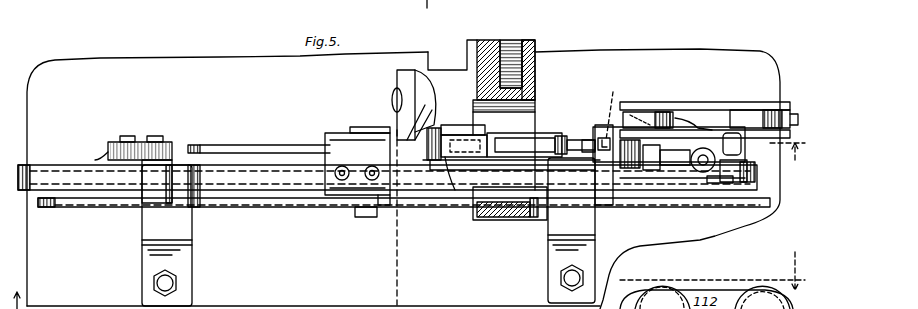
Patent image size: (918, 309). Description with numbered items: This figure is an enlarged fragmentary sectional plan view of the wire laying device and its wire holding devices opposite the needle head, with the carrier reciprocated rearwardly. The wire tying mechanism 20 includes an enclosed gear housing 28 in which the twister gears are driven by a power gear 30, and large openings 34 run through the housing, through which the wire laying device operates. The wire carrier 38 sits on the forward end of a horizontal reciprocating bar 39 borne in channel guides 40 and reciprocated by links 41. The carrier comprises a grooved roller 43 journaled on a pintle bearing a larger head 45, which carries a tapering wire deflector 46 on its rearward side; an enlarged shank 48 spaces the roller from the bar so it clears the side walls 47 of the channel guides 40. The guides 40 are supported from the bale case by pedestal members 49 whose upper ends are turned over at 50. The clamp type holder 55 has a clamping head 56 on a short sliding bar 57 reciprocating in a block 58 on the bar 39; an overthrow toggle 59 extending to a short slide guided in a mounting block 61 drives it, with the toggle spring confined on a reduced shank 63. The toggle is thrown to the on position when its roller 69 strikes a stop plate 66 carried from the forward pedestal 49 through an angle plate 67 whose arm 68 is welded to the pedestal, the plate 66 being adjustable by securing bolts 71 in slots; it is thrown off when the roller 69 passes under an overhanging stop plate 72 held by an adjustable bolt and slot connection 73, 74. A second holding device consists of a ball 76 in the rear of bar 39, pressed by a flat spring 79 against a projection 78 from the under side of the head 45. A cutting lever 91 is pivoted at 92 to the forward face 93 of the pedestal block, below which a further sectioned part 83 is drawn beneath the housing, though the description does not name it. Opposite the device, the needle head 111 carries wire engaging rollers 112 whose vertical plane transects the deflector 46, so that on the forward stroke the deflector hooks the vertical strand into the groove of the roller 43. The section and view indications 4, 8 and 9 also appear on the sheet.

The section line 4 is at (787, 166).
The section line 8 is at (433, 9).
The section line 9 is at (712, 271).
The wire tying mechanism 20 is at (515, 40).
The gear housing 28 is at (540, 42).
The power gear 30 is at (512, 40).
The openings 34 is at (535, 108).
The wire carrier 38 is at (667, 180).
The reciprocating bar 39 is at (630, 170).
The channel guides 40 is at (220, 160).
The links 41 is at (266, 200).
The roller 43 is at (655, 172).
The head 45 is at (712, 128).
The wire deflector 46 is at (640, 110).
The side walls 47 is at (605, 190).
The enlarged shank 48 is at (700, 172).
The pedestal members 49 is at (192, 247).
The turned portions 50 is at (200, 195).
The clamp type holder 55 is at (555, 134).
The clamping head 56 is at (650, 172).
The sliding bar 57 is at (615, 110).
The block 58 is at (598, 125).
The overthrow toggle 59 is at (512, 135).
The mounting block 61 is at (445, 125).
The shank 63 is at (432, 172).
The stop plate 66 is at (150, 138).
The angle plate 67 is at (98, 158).
The arm 68 is at (150, 192).
The roller 69 is at (455, 188).
The securing bolts 71 is at (127, 136).
The stop plate 72 is at (332, 133).
The adjustable bolt connection 73 is at (338, 182).
The slot connection 74 is at (346, 182).
The ball 76 is at (748, 168).
The projection 78 is at (741, 146).
The flat spring 79 is at (725, 183).
The bearing 83 is at (545, 222).
The cutting lever 91 is at (397, 76).
The pivot 92 is at (392, 98).
The forward face 93 is at (428, 62).
The needle head 111 is at (750, 104).
The wire engaging rollers 112 is at (688, 115).